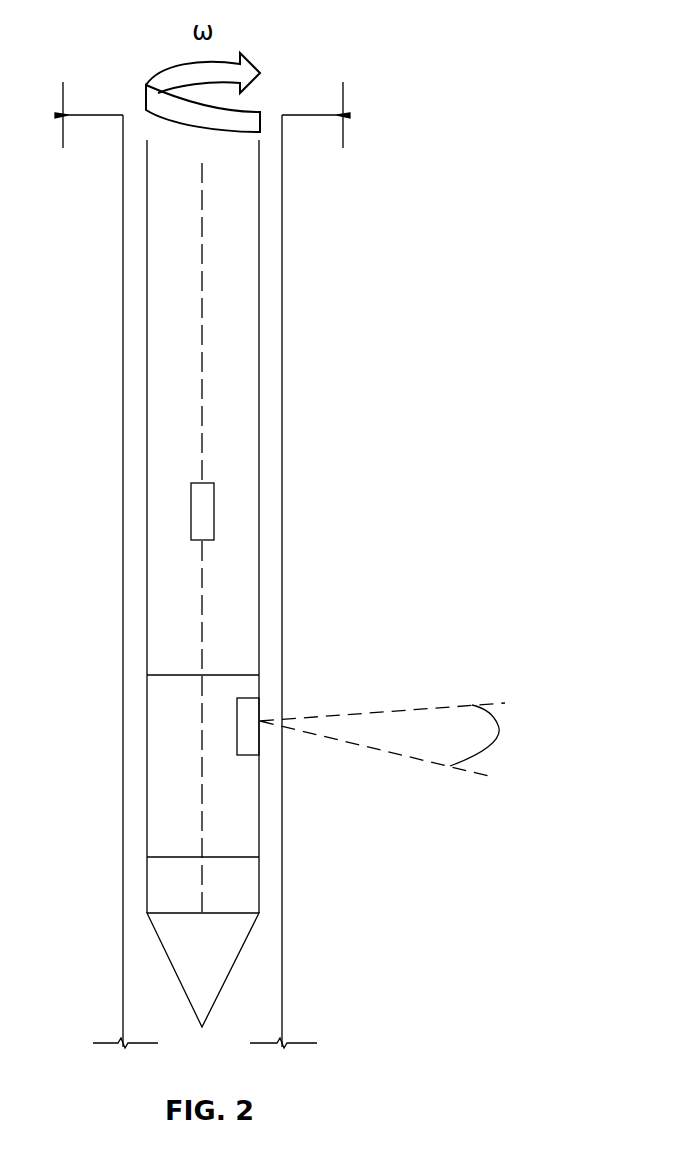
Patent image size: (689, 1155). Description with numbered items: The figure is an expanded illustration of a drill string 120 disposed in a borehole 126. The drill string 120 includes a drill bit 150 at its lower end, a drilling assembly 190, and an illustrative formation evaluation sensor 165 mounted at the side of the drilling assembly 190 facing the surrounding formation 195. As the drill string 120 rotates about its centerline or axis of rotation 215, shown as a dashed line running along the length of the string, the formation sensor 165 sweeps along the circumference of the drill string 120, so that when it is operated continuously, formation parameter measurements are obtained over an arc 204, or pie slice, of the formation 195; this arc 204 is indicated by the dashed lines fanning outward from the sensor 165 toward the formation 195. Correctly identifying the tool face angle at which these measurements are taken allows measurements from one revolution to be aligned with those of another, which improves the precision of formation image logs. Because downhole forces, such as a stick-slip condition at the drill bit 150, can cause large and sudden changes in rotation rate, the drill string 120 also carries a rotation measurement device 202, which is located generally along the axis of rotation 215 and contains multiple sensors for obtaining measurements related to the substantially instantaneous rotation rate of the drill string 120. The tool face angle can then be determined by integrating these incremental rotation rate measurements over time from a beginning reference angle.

The drill string 120 is at (259, 345).
The borehole 126 is at (267, 1005).
The drill bit 150 is at (192, 949).
The formation evaluation sensor 165 is at (259, 710).
The drilling assembly 190 is at (238, 773).
The formation 195 is at (435, 485).
The rotation measurement device 202 is at (191, 512).
The arc 204 is at (480, 735).
The centerline or axis of rotation 215 is at (202, 318).